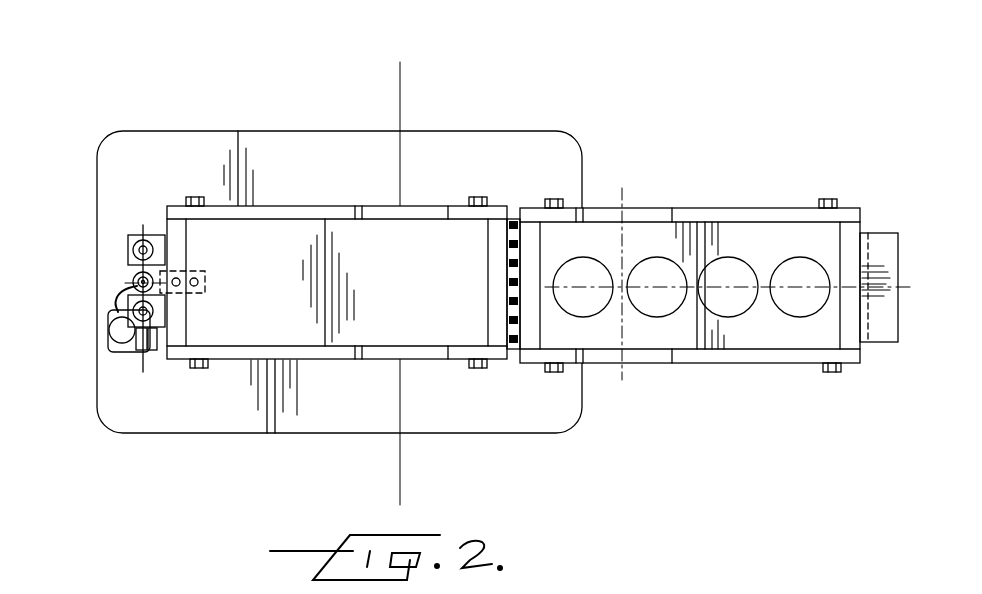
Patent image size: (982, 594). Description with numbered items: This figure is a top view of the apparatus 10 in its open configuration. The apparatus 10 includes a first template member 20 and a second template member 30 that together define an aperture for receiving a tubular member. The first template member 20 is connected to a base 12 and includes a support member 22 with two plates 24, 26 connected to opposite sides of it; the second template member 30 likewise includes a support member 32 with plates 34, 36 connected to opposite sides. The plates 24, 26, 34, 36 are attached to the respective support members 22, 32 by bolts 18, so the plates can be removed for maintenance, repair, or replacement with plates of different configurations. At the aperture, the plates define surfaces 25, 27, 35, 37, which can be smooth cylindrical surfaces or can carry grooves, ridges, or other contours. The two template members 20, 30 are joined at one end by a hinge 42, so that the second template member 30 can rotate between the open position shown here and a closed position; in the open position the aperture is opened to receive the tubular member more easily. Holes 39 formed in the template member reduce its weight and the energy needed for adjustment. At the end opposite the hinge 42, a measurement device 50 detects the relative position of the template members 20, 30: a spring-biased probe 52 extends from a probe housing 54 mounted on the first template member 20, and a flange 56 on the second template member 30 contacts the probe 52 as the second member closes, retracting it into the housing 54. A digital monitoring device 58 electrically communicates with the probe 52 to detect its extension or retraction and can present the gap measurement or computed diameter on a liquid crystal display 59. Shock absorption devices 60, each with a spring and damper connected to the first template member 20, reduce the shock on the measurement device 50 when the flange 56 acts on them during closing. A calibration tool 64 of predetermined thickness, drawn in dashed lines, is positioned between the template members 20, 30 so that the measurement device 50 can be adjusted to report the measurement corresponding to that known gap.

The apparatus 10 is at (703, 142).
The base 12 is at (158, 445).
The bolts 18 is at (196, 196).
The first template member 20 is at (298, 196).
The support member 22 is at (432, 325).
The plate 24 is at (325, 360).
The surface 25 is at (368, 358).
The plate 26 is at (232, 214).
The surface 27 is at (370, 212).
The second template member 30 is at (758, 198).
The support member 32 is at (735, 304).
The plate 34 is at (690, 360).
The surface 35 is at (598, 355).
The plate 36 is at (712, 215).
The surface 37 is at (592, 215).
The holes 39 is at (798, 302).
The hinge 42 is at (506, 282).
The measurement device 50 is at (124, 277).
The probe 52 is at (133, 275).
The probe housing 54 is at (166, 290).
The flange 56 is at (885, 246).
The digital monitoring device 58 is at (122, 353).
The liquid crystal display 59 is at (120, 326).
The shock absorption devices 60 is at (152, 240).
The calibration tool 64 is at (210, 275).